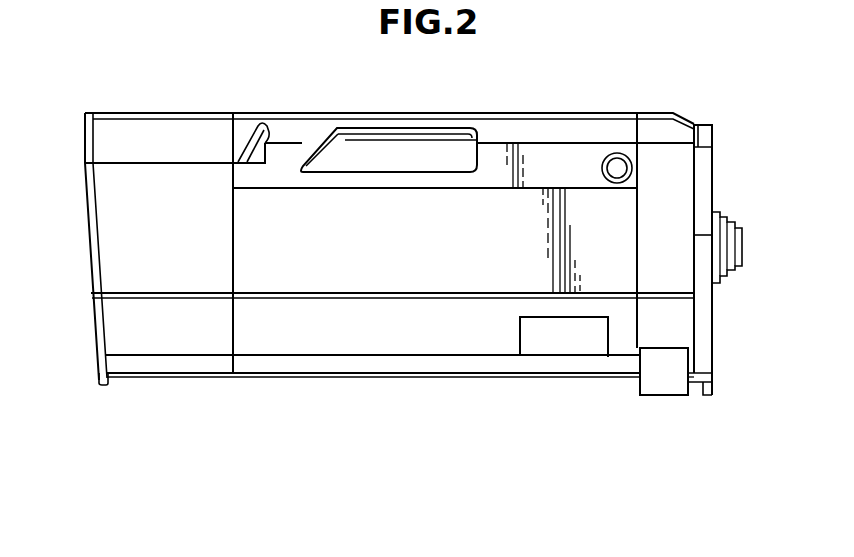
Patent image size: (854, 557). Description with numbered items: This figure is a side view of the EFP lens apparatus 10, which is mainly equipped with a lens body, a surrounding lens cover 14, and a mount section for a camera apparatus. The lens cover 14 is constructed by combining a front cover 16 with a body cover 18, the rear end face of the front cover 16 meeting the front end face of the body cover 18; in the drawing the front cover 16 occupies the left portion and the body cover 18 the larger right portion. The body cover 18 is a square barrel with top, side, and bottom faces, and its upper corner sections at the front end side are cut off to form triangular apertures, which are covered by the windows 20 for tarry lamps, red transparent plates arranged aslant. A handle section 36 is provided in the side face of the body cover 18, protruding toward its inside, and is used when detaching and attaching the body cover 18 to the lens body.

The EFP lens apparatus 10 is at (566, 89).
The window for tarry lamp 20 is at (245, 126).
The handle section 36 is at (444, 163).
The front cover 16 is at (203, 344).
The body cover 18 is at (302, 332).
The lens cover 14 is at (331, 424).